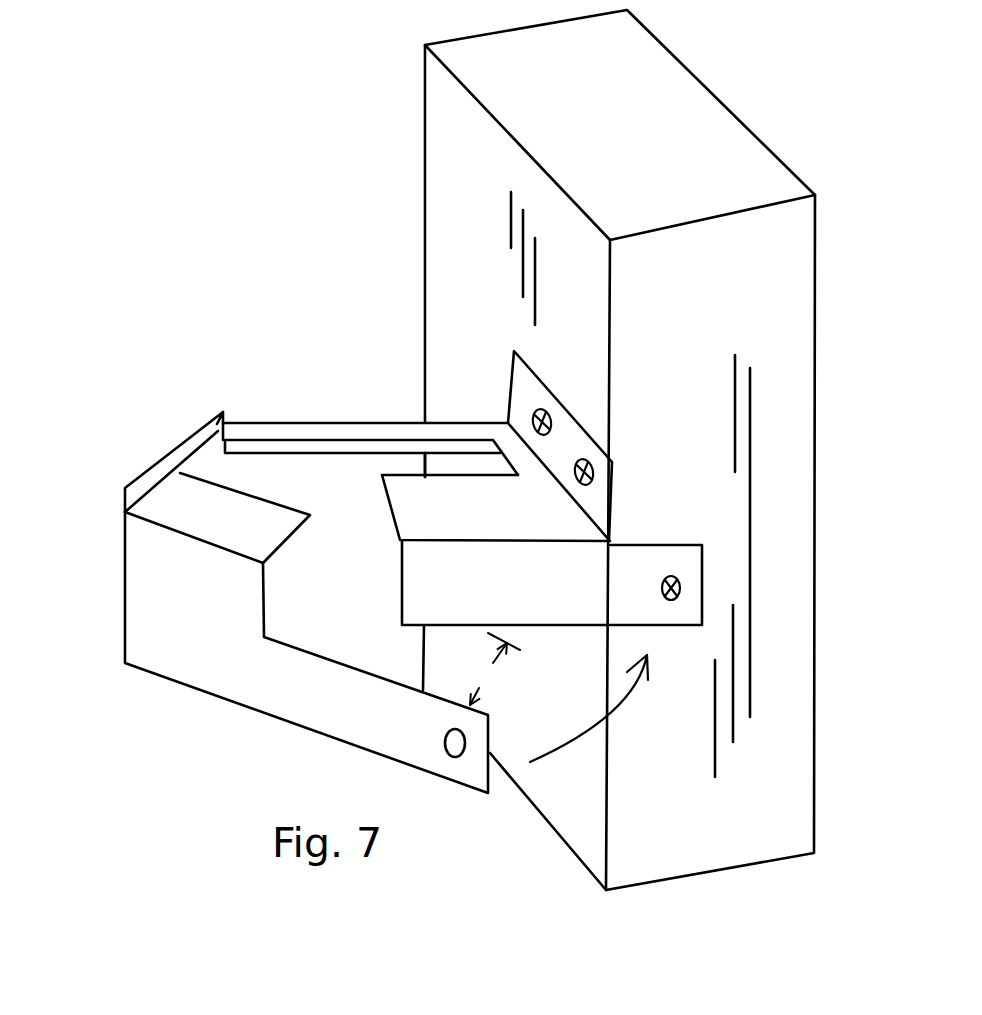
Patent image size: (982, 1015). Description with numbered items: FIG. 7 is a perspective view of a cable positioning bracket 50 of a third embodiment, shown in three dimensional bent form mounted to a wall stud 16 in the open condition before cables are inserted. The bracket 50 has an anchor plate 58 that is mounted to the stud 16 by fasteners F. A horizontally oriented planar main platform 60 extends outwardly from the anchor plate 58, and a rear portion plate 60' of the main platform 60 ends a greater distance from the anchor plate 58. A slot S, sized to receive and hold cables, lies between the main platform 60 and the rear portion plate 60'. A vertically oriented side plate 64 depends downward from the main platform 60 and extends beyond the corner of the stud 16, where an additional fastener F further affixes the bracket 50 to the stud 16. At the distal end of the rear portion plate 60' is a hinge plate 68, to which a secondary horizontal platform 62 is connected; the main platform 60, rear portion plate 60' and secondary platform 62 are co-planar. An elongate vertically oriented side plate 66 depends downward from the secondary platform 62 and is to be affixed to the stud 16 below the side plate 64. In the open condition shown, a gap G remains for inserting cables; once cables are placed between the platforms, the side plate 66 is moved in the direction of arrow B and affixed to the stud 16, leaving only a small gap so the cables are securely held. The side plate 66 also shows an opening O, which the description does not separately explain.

The wall stud 16 is at (423, 197).
The cable positioning bracket 50 is at (190, 238).
The anchor plate 58 is at (512, 366).
The fasteners F is at (588, 458).
The rear portion plate 60' is at (370, 415).
The hinge plate 68 is at (188, 443).
The secondary horizontal platform 62 is at (188, 529).
The side plate 66 is at (163, 626).
The main platform 60 is at (496, 508).
The side plate 64 is at (511, 597).
The slot S is at (392, 463).
The gap G is at (495, 669).
The arrow B is at (617, 710).
The opening O is at (455, 743).